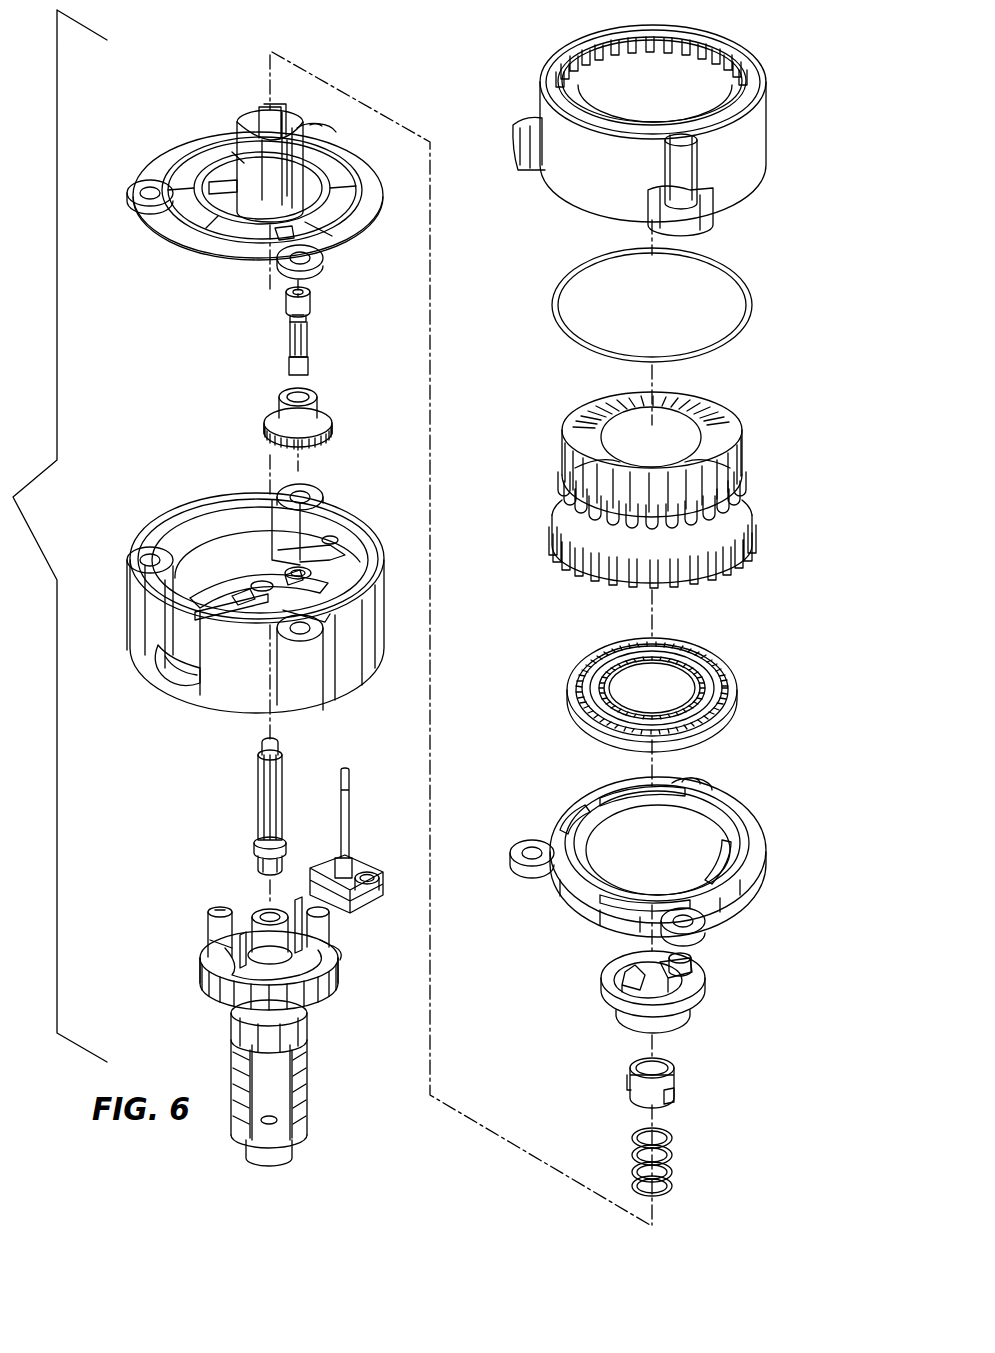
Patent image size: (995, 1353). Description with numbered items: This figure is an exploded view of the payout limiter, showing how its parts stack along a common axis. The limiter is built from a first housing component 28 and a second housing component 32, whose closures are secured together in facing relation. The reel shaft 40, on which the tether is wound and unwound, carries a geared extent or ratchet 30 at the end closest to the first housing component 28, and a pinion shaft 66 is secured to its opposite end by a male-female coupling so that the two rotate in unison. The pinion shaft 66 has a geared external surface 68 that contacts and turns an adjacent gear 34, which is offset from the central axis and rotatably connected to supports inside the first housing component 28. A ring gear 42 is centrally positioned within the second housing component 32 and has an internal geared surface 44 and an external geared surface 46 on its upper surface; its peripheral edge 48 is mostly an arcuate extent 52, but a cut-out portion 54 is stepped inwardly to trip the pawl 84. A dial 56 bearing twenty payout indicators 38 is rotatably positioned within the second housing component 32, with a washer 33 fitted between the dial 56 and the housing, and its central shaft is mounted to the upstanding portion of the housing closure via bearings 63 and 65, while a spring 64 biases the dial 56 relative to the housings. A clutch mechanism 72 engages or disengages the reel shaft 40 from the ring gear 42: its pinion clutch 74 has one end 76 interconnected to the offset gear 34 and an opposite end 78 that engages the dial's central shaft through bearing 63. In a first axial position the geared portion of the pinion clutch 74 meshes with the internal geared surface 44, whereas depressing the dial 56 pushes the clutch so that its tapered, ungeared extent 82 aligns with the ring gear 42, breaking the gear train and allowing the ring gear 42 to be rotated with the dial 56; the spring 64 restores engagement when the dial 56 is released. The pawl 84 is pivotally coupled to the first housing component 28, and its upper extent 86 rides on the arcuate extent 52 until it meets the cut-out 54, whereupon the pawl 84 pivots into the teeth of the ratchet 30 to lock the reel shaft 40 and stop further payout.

The first housing component 28 is at (228, 603).
The ratchet 30 is at (340, 980).
The second housing component 32 is at (758, 132).
The washer 33 is at (745, 278).
The gear 34 is at (332, 422).
The payout indicators 38 is at (690, 398).
The reel shaft 40 is at (308, 1070).
The ring gear 42 is at (667, 680).
The internal geared surface 44 is at (690, 665).
The external geared surface 46 is at (720, 680).
The peripheral edge 48 is at (595, 720).
The arcuate peripheral edge 52 is at (685, 735).
The cut-out portion 54 is at (690, 650).
The dial 56 is at (675, 477).
The bearing 63 is at (702, 1003).
The spring 64 is at (673, 1160).
The bearing 65 is at (680, 1082).
The pinion shaft 66 is at (268, 790).
The geared external surface 68 is at (238, 806).
The clutch mechanism 72 is at (284, 361).
The pinion clutch 74 is at (308, 340).
The end of pinion clutch 76 is at (312, 368).
The opposite end of pinion clutch 78 is at (286, 300).
The tapered ungeared extent 82 is at (290, 318).
The pawl 84 is at (356, 853).
The upper extent of pawl 86 is at (349, 785).